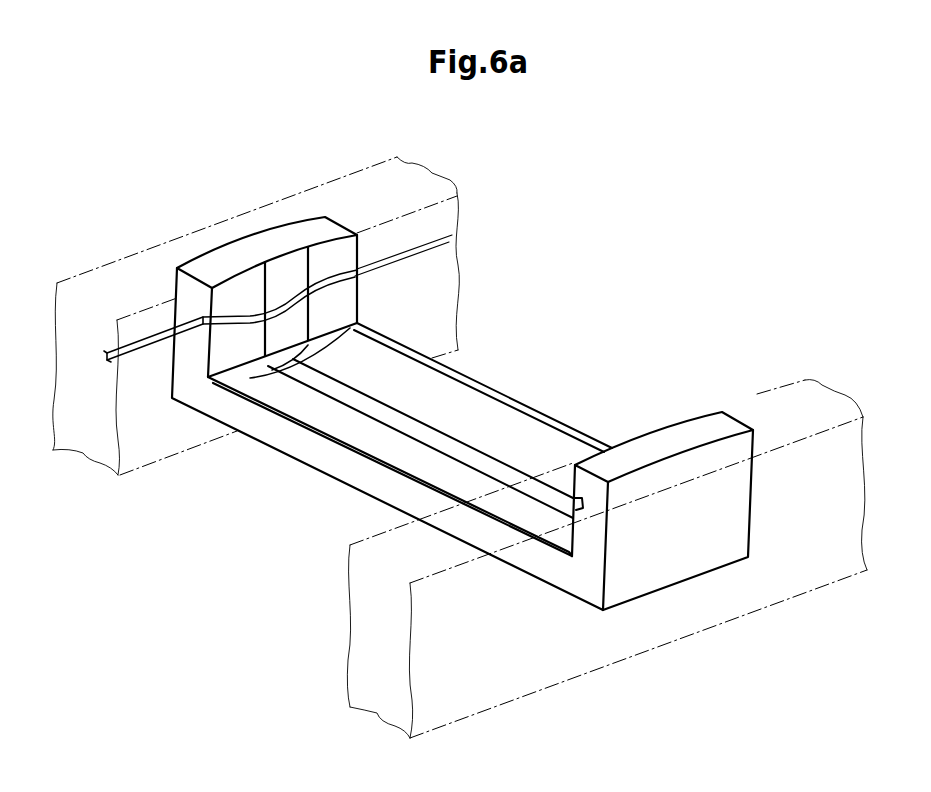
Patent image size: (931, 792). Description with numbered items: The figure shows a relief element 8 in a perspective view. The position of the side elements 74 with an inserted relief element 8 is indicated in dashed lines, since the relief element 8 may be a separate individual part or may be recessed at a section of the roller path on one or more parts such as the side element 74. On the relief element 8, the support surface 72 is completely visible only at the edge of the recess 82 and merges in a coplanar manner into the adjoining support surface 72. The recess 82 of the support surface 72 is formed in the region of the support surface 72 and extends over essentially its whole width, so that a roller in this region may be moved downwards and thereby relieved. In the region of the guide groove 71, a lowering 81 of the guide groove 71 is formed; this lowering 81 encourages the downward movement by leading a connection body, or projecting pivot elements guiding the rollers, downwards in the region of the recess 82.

The relief element 8 is at (227, 260).
The guide groove 71 is at (367, 272).
The support surface 72 is at (532, 406).
The side element 74 is at (792, 402).
The lowering 81 is at (287, 297).
The recess 82 is at (420, 421).